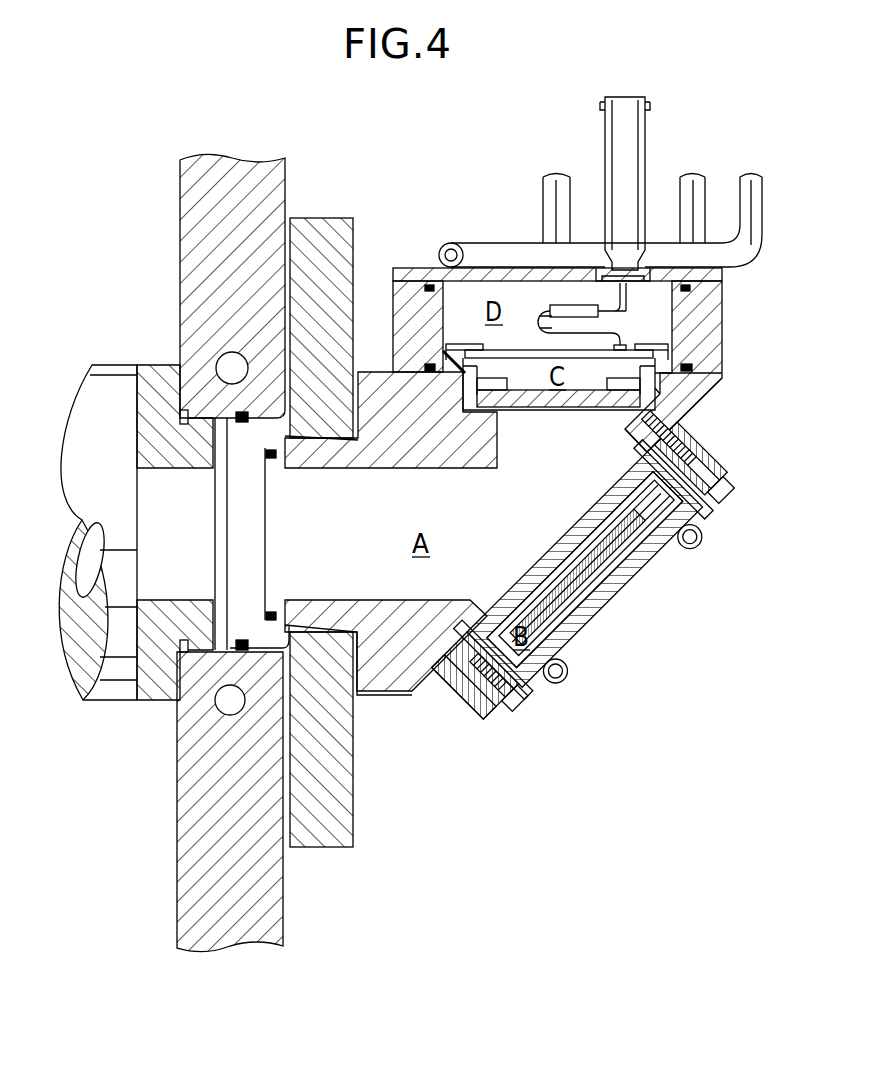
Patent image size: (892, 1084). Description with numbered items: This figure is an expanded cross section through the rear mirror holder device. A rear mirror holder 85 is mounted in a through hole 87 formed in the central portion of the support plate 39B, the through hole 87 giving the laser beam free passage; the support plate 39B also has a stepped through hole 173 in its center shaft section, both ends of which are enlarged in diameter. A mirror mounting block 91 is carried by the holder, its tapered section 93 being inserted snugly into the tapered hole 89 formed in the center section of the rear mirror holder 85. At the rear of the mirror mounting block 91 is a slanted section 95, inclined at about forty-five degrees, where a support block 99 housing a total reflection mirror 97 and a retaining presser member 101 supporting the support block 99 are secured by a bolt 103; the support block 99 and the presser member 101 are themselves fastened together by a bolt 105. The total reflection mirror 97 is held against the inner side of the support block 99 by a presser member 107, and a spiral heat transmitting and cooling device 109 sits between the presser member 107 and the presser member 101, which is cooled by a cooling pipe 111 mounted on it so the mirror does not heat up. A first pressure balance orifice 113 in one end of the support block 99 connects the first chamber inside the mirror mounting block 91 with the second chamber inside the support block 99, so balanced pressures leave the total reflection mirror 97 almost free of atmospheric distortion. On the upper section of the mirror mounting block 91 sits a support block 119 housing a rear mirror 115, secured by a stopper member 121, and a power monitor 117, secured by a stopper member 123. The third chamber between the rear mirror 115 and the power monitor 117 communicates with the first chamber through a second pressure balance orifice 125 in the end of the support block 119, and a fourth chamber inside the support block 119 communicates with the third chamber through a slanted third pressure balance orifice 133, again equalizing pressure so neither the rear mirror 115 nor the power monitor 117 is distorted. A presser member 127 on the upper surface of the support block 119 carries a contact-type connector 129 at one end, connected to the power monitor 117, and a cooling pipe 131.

The support plate 39B is at (197, 802).
The rear mirror holder 85 is at (338, 847).
The through hole 87 is at (203, 417).
The tapered hole 89 is at (335, 628).
The mirror mounting block 91 is at (413, 677).
The tapered section 93 is at (342, 457).
The slanted section 95 is at (690, 400).
The total reflection mirror 97 is at (568, 532).
The support block 99 is at (482, 685).
The presser member 101 is at (590, 617).
The bolt 103 is at (708, 493).
The bolt 105 is at (524, 710).
The presser member 107 is at (610, 528).
The spiral heat transmitting and cooling device 109 is at (590, 587).
The cooling pipe 111 is at (693, 542).
The first pressure balance orifice 113 is at (457, 670).
The rear mirror 115 is at (575, 407).
The power monitor 117 is at (660, 378).
The support block 119 is at (710, 332).
The stopper member 121 is at (493, 386).
The stopper member 123 is at (464, 344).
The second pressure balance orifice 125 is at (487, 408).
The presser member 127 is at (405, 268).
The contact-type connector 129 is at (643, 142).
The cooling pipe 131 is at (487, 252).
The third pressure balance orifice 133 is at (445, 360).
The through hole 173 is at (222, 710).